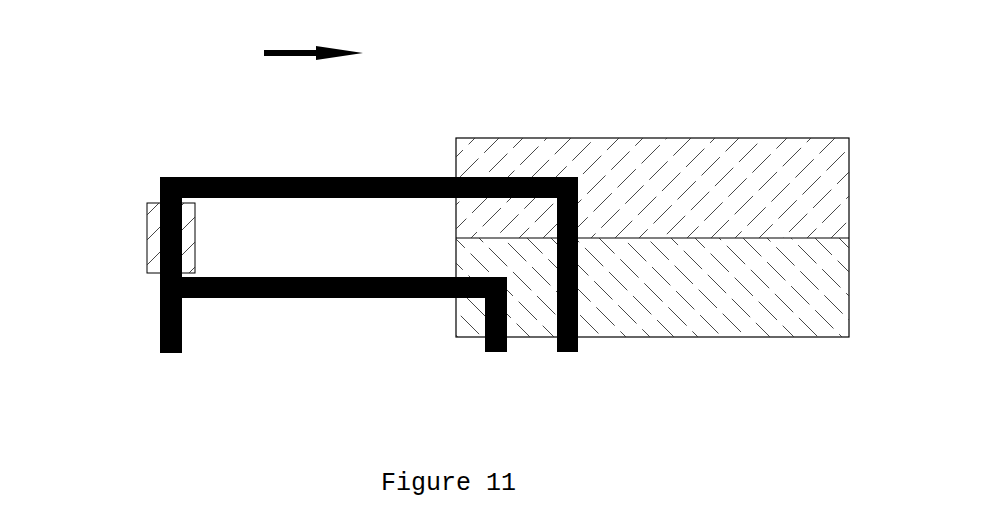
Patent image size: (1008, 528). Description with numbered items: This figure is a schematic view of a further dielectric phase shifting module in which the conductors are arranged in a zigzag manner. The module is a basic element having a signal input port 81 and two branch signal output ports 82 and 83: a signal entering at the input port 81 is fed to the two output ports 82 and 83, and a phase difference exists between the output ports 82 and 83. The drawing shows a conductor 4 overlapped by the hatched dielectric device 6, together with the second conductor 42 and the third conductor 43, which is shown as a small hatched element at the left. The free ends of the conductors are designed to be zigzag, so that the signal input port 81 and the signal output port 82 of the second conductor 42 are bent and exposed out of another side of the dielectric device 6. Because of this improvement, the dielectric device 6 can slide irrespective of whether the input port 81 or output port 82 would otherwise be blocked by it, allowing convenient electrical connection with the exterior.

The profile / top bar 4 is at (358, 178).
The dielectric device 6 is at (640, 152).
The second conductor 42 is at (362, 298).
The third conductor 43 is at (150, 220).
The signal input port 81 is at (570, 278).
The signal output port 82 is at (496, 328).
The signal output port 83 is at (172, 278).